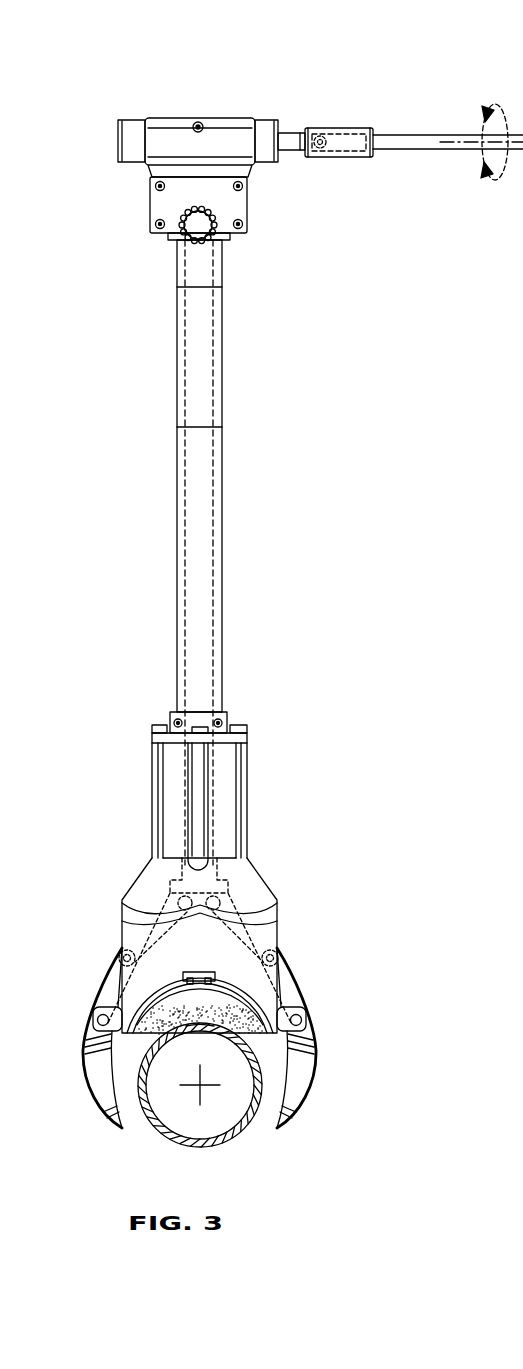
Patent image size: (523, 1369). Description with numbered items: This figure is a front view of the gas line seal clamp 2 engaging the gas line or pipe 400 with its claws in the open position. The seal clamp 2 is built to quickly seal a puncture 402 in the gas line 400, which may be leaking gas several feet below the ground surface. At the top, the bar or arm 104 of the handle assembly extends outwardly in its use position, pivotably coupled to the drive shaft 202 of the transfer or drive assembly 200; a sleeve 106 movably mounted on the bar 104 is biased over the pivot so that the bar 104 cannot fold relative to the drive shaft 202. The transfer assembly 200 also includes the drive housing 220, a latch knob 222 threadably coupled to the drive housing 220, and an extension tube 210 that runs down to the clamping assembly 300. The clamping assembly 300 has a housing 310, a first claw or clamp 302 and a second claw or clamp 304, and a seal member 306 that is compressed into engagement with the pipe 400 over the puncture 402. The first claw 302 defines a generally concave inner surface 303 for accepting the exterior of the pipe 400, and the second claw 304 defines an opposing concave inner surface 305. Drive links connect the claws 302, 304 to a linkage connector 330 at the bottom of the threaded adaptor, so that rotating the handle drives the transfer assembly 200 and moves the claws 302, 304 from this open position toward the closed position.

The gas line seal clamp 2 is at (112, 97).
The bar or arm 104 is at (423, 135).
The sleeve 106 is at (348, 128).
The transfer or drive assembly 200 is at (187, 219).
The drive shaft 202 is at (283, 135).
The extension tube 210 is at (222, 321).
The drive housing 220 is at (240, 205).
The latch knob 222 is at (195, 233).
The clamping assembly 300 is at (209, 922).
The first claw or clamp 302 is at (83, 1080).
The concave inner surface 303 is at (100, 1015).
The second claw or clamp 304 is at (312, 1098).
The concave inner surface 305 is at (302, 1017).
The seal member 306 is at (215, 1012).
The housing 310 is at (245, 888).
The linkage connector 330 is at (170, 886).
The gas line or pipe 400 is at (259, 1102).
The puncture 402 is at (198, 1030).